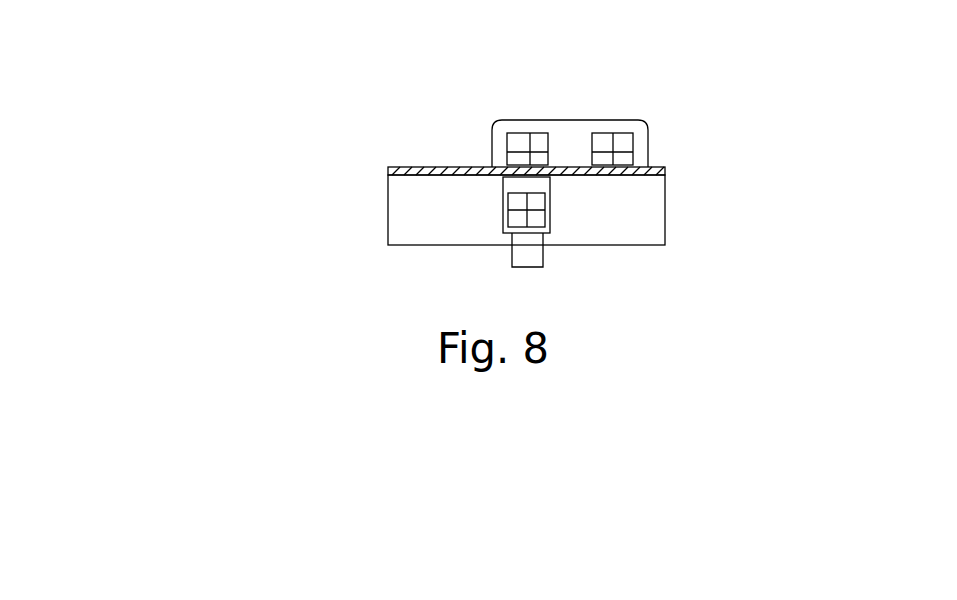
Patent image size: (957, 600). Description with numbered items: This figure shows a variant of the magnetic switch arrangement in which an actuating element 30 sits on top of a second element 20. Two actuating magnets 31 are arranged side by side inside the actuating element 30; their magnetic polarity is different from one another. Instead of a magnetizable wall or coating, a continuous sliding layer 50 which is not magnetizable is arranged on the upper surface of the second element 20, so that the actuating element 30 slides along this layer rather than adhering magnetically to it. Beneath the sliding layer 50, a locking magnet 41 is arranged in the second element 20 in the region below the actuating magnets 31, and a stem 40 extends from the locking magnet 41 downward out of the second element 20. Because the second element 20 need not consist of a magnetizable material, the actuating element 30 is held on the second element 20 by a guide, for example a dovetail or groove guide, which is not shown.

The second element 20 is at (645, 212).
The actuating element 30 is at (556, 118).
The actuating magnets 31 is at (512, 140).
The stem 40 is at (548, 263).
The locking magnet 41 is at (515, 214).
The sliding layer 50 is at (390, 166).